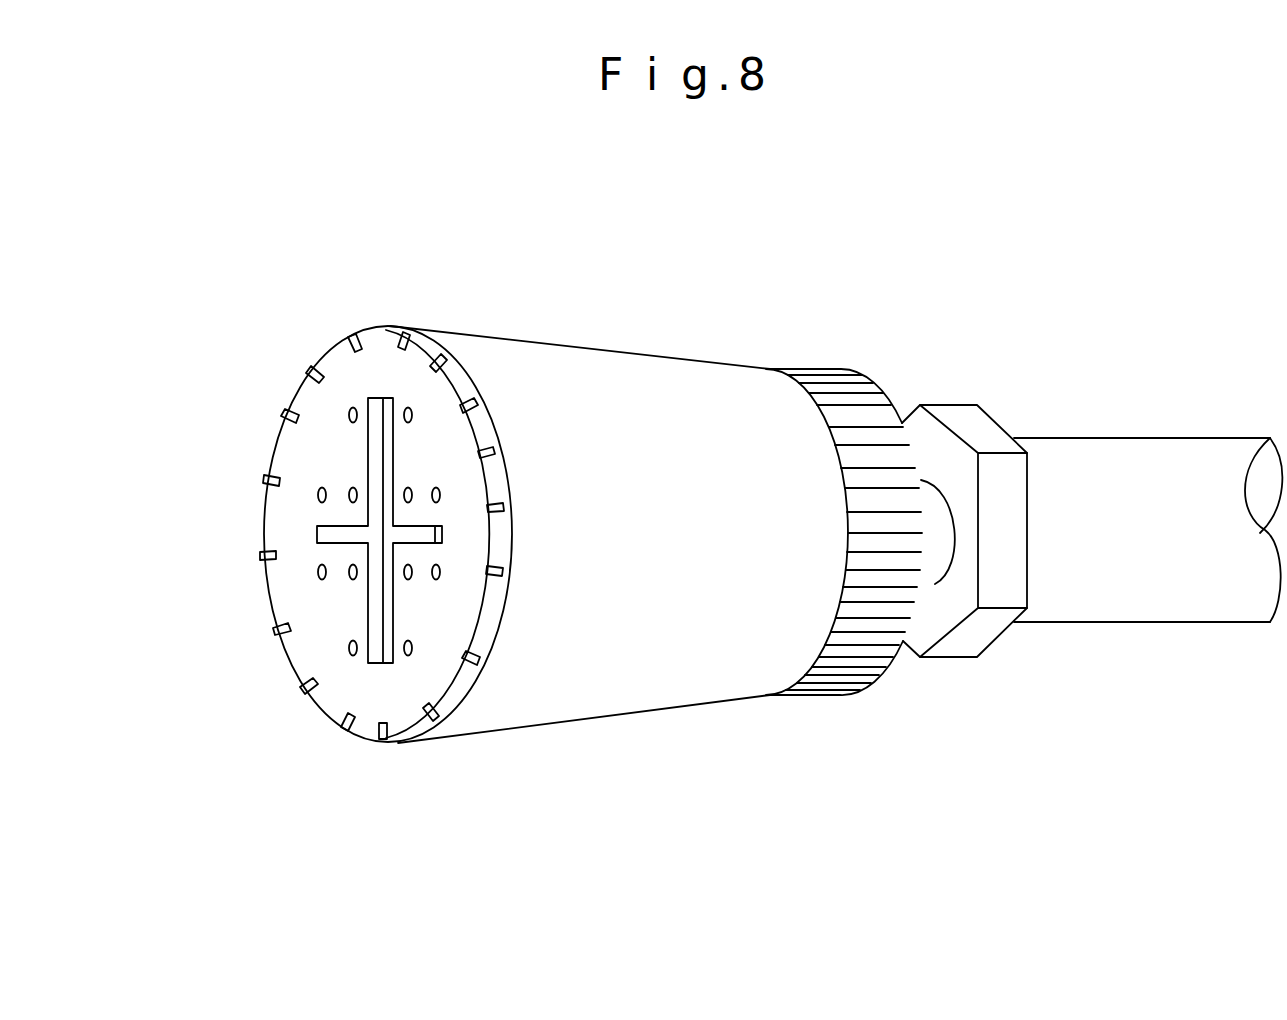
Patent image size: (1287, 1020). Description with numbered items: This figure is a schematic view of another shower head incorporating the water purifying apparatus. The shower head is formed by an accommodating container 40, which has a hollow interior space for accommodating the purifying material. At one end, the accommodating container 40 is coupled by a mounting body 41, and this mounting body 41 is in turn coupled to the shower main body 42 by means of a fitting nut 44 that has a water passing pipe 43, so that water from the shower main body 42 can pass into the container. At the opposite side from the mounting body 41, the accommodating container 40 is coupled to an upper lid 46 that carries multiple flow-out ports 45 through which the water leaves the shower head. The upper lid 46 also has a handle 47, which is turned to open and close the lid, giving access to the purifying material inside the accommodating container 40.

The accommodating container 40 is at (603, 715).
The mounting body 41 is at (815, 700).
The shower main body 42 is at (1200, 623).
The water passing pipe 43 is at (937, 562).
The fitting nut 44 is at (965, 640).
The flow-out ports 45 is at (348, 647).
The upper lid 46 is at (363, 743).
The handle 47 is at (370, 526).